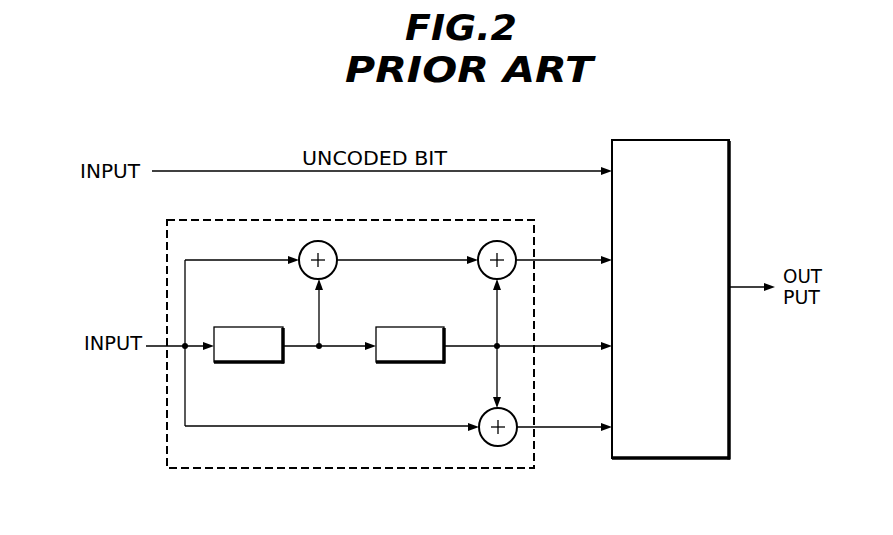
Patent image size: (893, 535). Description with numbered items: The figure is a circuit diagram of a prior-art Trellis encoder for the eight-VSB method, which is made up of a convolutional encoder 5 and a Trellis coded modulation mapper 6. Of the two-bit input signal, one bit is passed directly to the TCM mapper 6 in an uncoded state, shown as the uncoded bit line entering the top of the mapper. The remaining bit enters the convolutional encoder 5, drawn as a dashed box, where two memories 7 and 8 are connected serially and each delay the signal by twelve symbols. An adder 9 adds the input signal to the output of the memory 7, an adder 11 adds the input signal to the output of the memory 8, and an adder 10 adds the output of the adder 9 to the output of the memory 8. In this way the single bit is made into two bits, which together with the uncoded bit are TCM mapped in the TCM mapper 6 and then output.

The convolutional encoder 5 is at (350, 468).
The TCM mapper 6 is at (677, 446).
The memory 7 is at (248, 364).
The memory 8 is at (410, 364).
The adder 9 is at (307, 274).
The adder 10 is at (487, 274).
The adder 11 is at (487, 438).